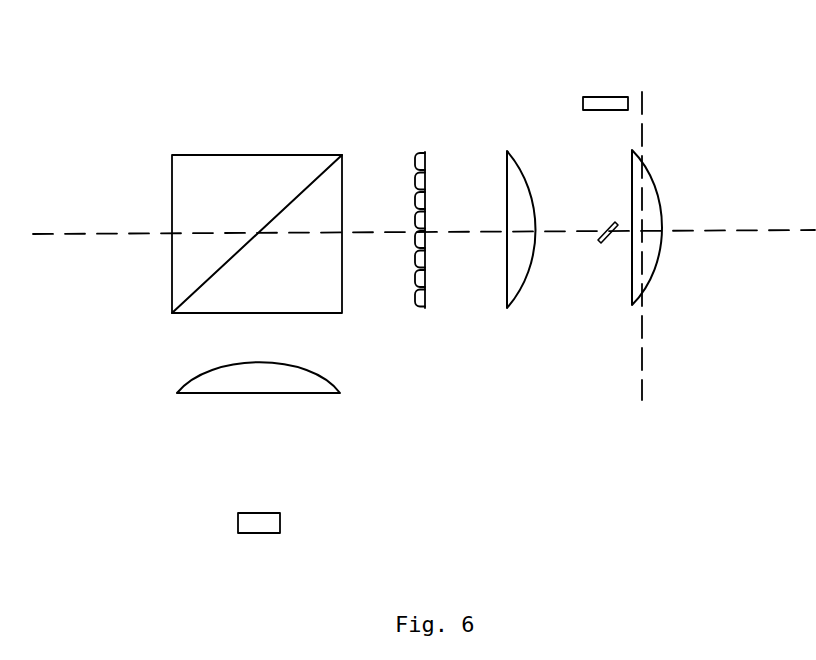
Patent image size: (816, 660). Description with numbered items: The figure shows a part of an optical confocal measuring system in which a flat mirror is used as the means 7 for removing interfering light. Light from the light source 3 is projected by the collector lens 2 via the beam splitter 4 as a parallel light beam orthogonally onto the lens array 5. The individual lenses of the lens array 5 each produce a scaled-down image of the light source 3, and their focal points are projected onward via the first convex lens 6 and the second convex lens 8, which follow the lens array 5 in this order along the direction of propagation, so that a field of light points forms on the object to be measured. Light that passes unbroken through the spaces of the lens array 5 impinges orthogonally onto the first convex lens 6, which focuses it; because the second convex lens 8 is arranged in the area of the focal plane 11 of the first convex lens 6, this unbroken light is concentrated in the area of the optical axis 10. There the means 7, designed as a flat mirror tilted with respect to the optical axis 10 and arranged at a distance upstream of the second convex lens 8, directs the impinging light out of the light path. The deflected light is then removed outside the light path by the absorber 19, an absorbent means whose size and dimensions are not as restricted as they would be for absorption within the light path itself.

The collector lens 2 is at (320, 386).
The light source 3 is at (272, 527).
The beam splitter 4 is at (208, 175).
The lens array 5 is at (425, 163).
The first convex lens 6 is at (513, 174).
The means 7 is at (603, 236).
The second convex lens 8 is at (645, 186).
The optical axis 10 is at (744, 229).
The focal plane 11 is at (643, 390).
The absorber 19 is at (593, 98).